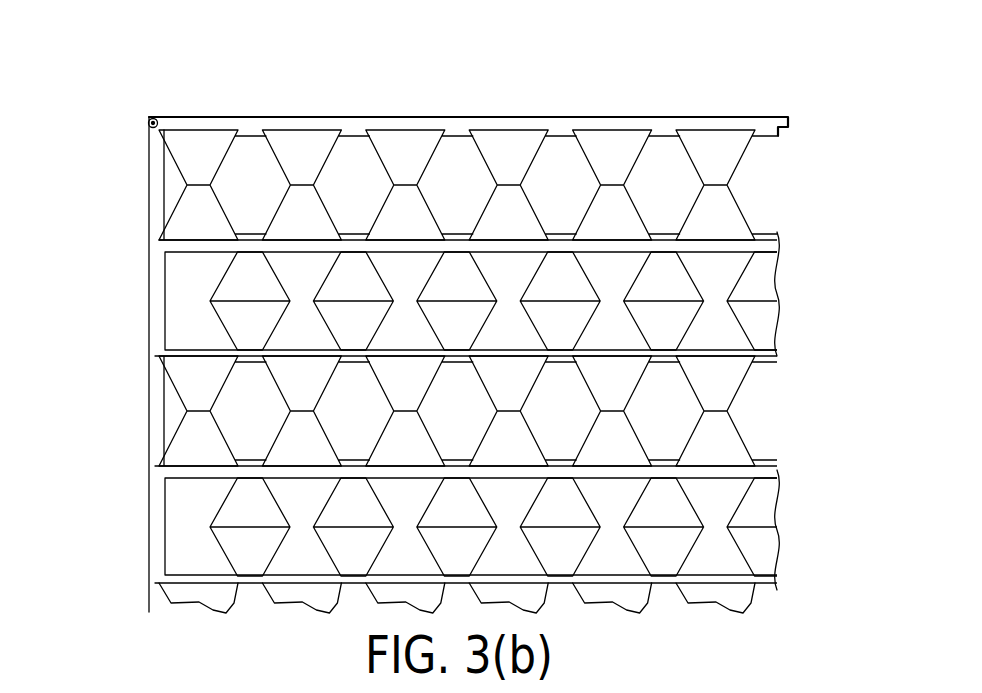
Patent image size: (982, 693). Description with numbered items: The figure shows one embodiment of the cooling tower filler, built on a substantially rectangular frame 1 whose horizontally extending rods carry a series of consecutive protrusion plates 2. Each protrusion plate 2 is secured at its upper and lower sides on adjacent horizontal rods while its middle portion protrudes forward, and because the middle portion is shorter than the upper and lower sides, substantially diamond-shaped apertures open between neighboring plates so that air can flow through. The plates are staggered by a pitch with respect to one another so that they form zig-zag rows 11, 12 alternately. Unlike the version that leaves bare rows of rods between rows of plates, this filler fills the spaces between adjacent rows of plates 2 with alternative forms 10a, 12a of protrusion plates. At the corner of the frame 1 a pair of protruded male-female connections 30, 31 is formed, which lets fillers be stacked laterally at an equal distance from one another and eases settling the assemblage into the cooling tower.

The frame 1 is at (465, 108).
The protrusion plates 2 is at (727, 146).
The alternative form of protrusion plates 10a is at (240, 281).
The zig-zag row 11 is at (112, 311).
The zig-zag row 12 is at (113, 404).
The alternative form of protrusion plates 12a is at (187, 459).
The male connection 30 is at (151, 119).
The female connection 31 is at (153, 123).